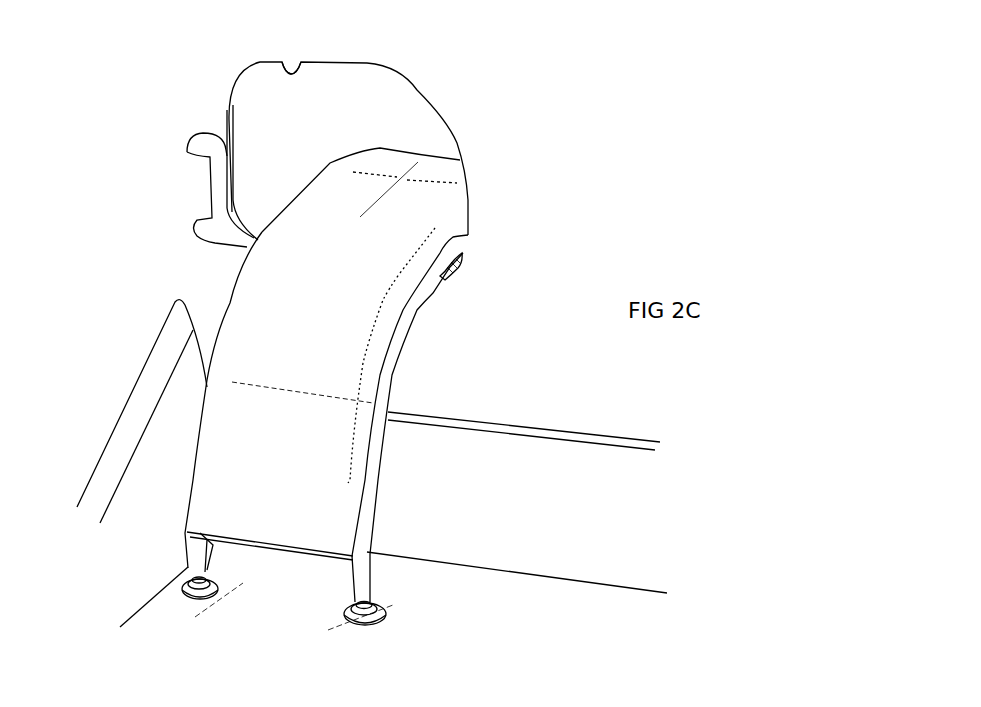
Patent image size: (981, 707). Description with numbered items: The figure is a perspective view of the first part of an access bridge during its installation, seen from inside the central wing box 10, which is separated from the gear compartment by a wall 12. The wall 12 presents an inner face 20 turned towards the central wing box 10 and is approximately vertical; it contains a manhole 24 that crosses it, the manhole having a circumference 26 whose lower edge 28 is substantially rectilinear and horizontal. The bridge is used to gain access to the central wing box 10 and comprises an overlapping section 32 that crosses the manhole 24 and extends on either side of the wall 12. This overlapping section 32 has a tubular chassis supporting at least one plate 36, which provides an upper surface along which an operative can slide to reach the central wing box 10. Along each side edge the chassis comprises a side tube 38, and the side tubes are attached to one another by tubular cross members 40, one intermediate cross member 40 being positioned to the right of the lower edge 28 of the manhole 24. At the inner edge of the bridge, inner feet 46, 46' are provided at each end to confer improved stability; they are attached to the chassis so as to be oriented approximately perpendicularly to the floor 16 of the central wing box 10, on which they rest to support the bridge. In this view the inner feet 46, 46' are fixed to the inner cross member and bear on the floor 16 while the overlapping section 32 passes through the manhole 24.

The central wing box 10 is at (73, 230).
The wall 12 is at (509, 162).
The floor 16 is at (482, 577).
The inner face 20 is at (513, 117).
The manhole 24 is at (240, 97).
The circumference 26 is at (278, 63).
The lower edge 28 is at (460, 263).
The overlapping section 32 is at (275, 232).
The plate 36 is at (232, 324).
The side tube 38 is at (390, 391).
The tubular cross member 40 is at (276, 548).
The inner foot 46 is at (376, 592).
The inner foot 46' is at (181, 580).